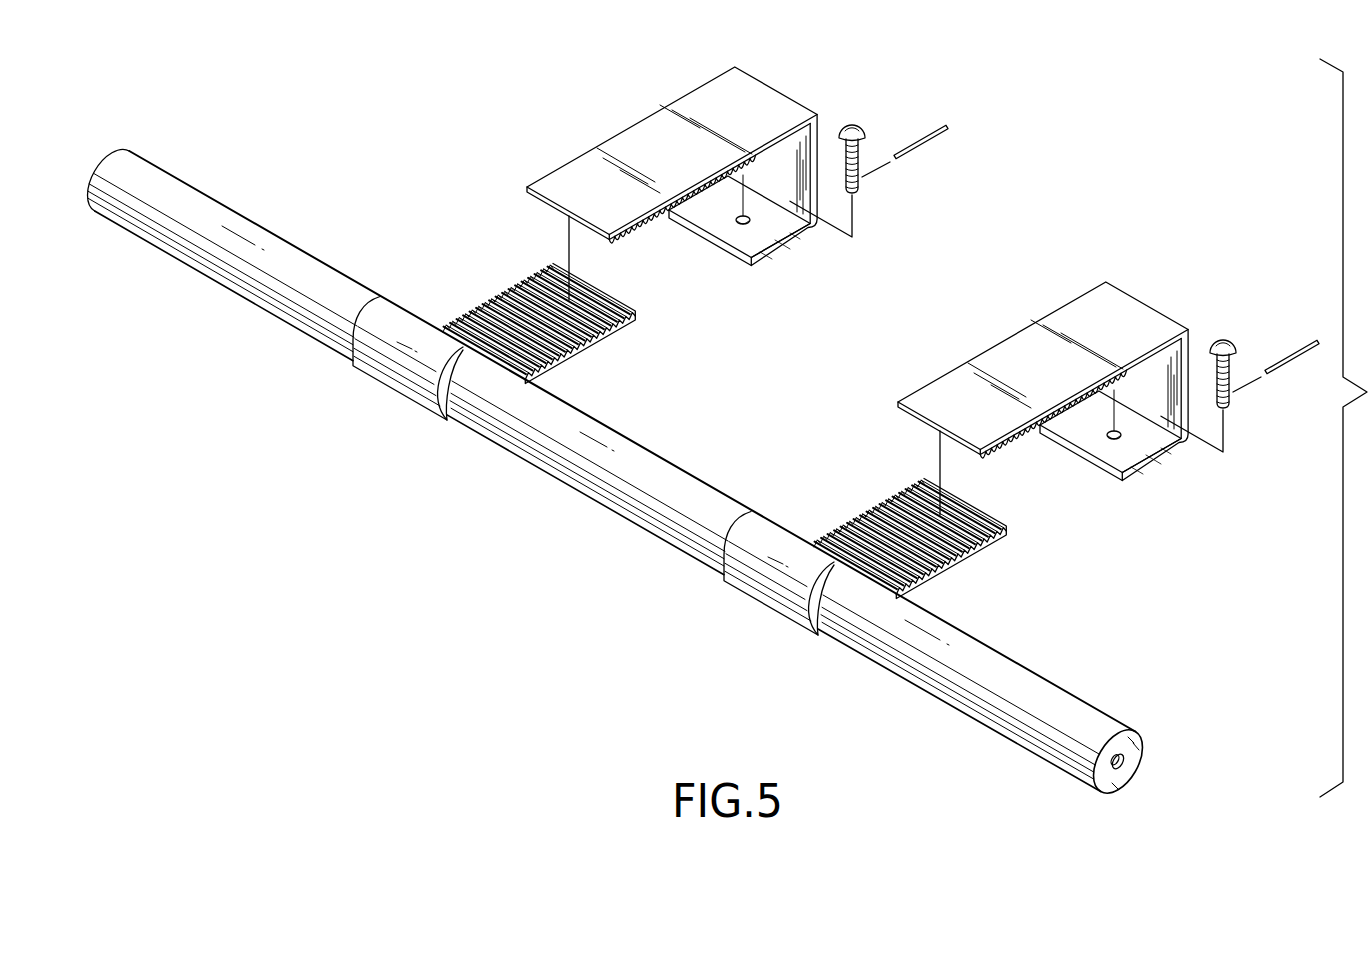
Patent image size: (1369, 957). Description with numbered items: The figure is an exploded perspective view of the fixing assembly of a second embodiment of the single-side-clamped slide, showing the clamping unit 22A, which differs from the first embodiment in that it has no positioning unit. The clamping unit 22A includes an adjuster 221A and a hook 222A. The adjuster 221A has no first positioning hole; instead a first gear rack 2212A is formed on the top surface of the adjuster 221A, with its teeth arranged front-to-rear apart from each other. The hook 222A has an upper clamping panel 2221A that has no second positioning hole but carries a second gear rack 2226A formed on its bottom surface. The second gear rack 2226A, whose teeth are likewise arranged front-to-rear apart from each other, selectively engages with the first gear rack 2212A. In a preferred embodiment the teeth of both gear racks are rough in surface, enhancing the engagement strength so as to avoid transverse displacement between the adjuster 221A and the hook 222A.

The clamping unit 22A is at (845, 73).
The hook 222A is at (1024, 387).
The upper clamping panel 2221A is at (1043, 366).
The second gear rack 2226A is at (1053, 433).
The adjuster 221A is at (915, 515).
The first gear rack 2212A is at (889, 533).